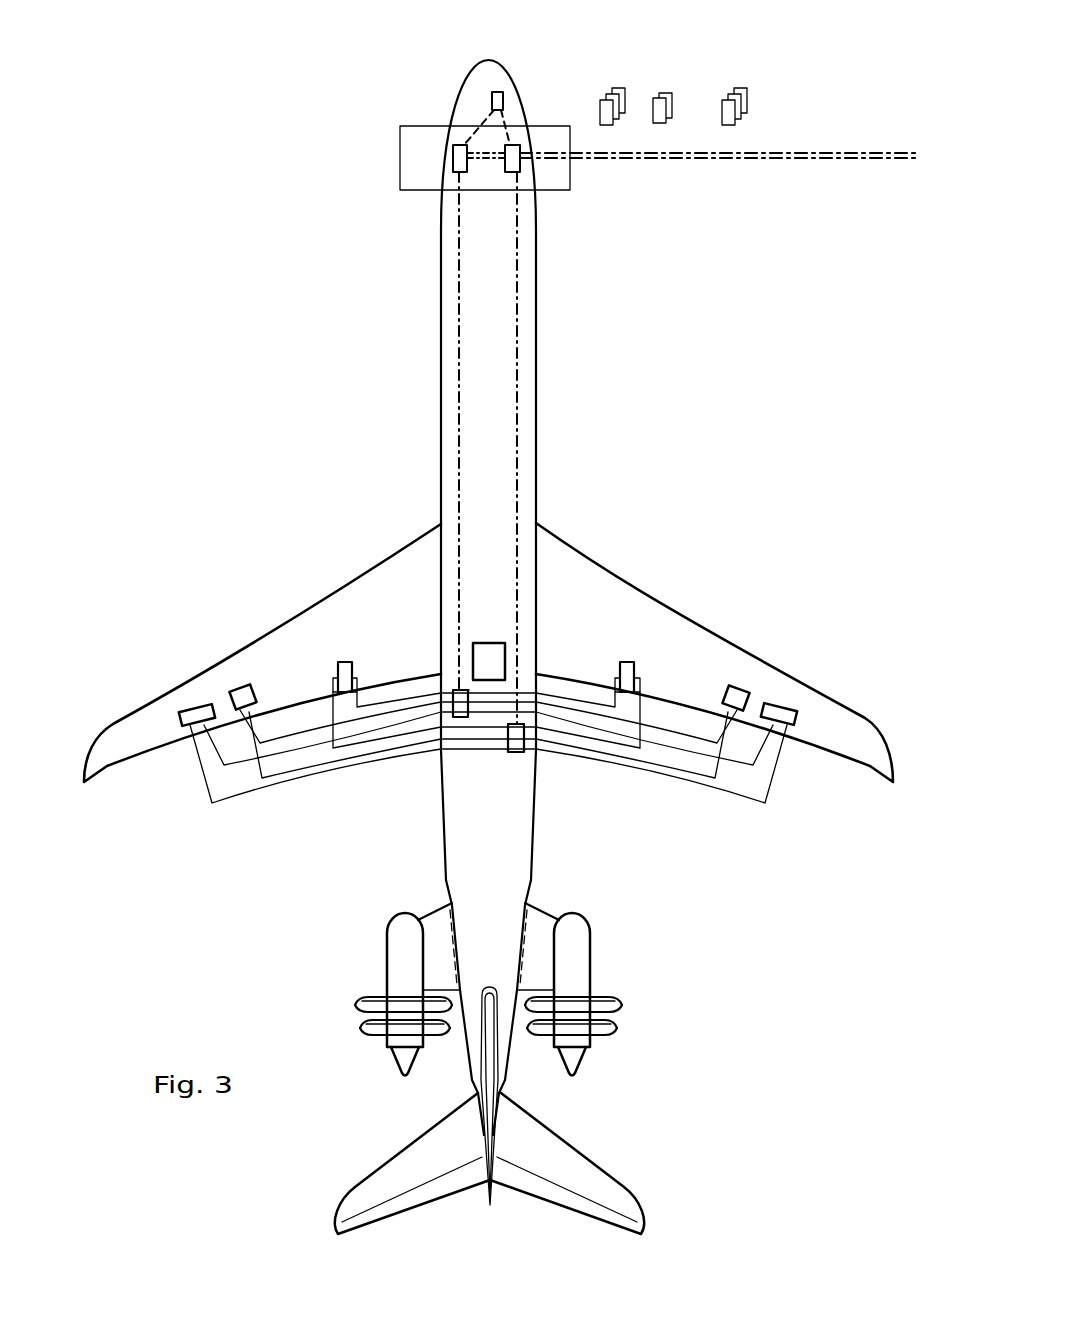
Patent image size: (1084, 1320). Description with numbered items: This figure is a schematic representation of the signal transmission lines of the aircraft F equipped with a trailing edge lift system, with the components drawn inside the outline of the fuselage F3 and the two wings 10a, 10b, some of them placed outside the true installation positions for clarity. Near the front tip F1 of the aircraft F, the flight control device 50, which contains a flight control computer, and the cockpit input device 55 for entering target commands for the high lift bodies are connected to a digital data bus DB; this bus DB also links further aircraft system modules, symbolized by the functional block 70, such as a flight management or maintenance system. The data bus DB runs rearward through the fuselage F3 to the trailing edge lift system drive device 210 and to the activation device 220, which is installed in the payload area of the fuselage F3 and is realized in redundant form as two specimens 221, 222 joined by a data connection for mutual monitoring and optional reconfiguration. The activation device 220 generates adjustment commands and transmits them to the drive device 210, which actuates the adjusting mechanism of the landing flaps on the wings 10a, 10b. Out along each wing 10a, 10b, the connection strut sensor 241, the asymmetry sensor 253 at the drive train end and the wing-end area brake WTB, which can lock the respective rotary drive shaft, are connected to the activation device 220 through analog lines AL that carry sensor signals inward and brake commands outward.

The aircraft F is at (224, 228).
The front tip of the aircraft F1 is at (451, 51).
The fuselage F3 is at (440, 445).
The digital data bus DB is at (679, 168).
The flight control device 50 is at (377, 159).
The input device 55 is at (490, 100).
The functional block of further aircraft system modules 70 is at (784, 101).
The first wing 10a is at (138, 725).
The second wing 10b is at (873, 743).
The trailing edge lift system drive device 210 is at (478, 657).
The trailing edge lift system activation device 220 is at (463, 760).
The first specimen of the activation device 221 is at (458, 690).
The second specimen of the activation device 222 is at (517, 753).
The connection strut sensor 241 is at (343, 662).
The asymmetry sensor 253 is at (197, 708).
The wing-end area brake WTB is at (243, 690).
The analog lines AL is at (677, 797).